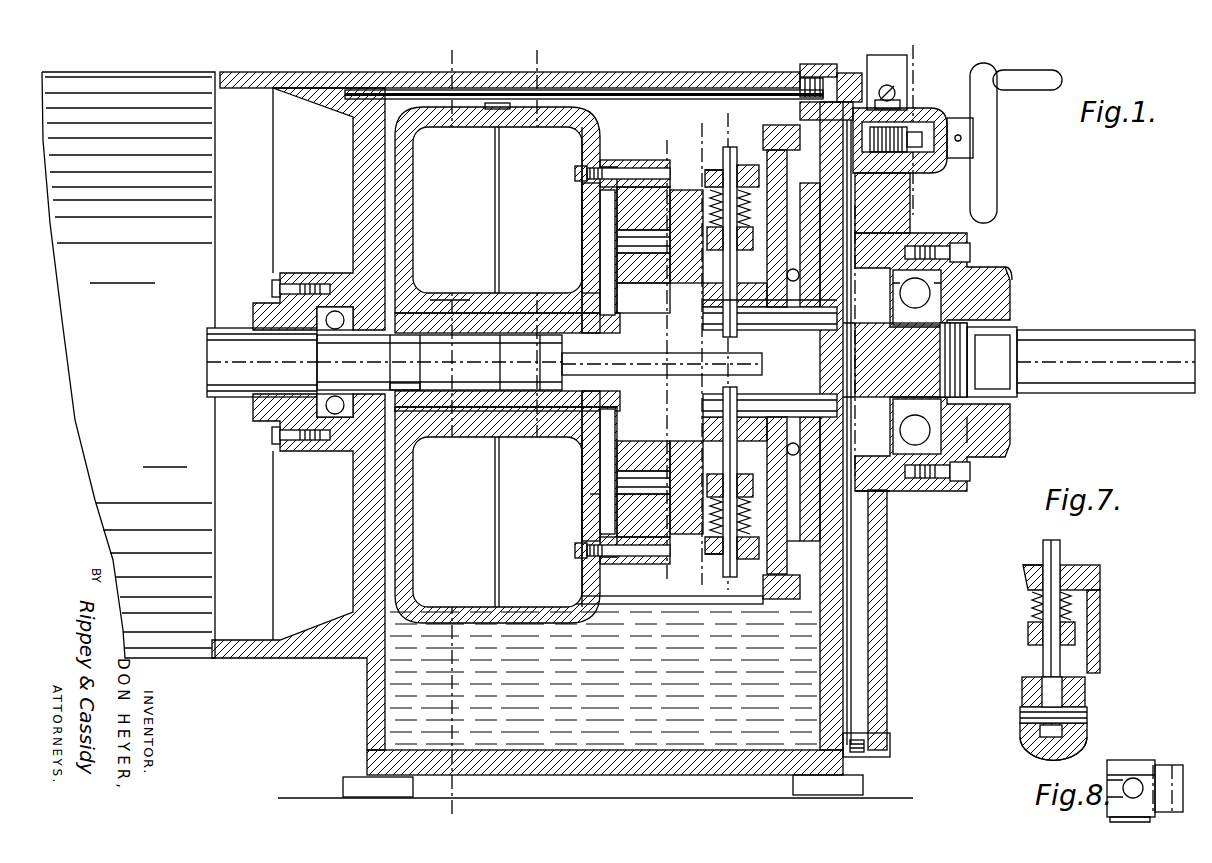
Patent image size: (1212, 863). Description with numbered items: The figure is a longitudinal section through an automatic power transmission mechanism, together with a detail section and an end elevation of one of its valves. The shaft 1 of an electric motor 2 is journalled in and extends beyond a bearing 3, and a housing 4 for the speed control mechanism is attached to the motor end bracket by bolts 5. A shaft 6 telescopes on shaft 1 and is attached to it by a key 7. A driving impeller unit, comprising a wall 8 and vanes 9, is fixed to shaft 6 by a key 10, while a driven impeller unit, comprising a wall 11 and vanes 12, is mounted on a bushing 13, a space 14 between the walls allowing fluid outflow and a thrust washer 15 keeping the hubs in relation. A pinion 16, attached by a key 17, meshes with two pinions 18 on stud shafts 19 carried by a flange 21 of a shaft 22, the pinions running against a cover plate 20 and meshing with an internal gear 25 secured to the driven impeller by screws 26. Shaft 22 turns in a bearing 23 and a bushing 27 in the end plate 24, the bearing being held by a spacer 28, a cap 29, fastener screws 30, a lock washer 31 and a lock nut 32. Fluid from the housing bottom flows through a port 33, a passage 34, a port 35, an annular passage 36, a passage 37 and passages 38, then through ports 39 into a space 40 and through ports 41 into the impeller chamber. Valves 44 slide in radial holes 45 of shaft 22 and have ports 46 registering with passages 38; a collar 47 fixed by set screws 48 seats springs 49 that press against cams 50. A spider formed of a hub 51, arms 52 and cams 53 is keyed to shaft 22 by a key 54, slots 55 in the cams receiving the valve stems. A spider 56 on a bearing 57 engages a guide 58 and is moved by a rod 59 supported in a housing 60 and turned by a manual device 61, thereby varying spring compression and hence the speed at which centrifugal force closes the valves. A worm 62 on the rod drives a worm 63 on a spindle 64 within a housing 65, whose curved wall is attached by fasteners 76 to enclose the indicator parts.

In FIG. 1, the shaft 1 is at (240, 400).
In FIG. 1, the electric motor 2 is at (270, 72).
In FIG. 1, the bearing 3 is at (537, 50).
In FIG. 1, the housing 4 is at (650, 72).
In FIG. 1, the bolts 5 is at (688, 90).
In FIG. 1, the shaft 6 is at (856, 215).
In FIG. 7, the shaft 6 is at (1022, 748).
In FIG. 1, the key 7 is at (478, 340).
In FIG. 1, the wall 8 is at (413, 195).
In FIG. 1, the vanes 9 is at (472, 265).
In FIG. 1, the key 10 is at (413, 393).
In FIG. 1, the wall 11 is at (587, 253).
In FIG. 1, the vanes 12 is at (513, 262).
In FIG. 1, the bushing 13 is at (520, 340).
In FIG. 1, the space 14 is at (499, 140).
In FIG. 1, the thrust washer 15 is at (440, 295).
In FIG. 1, the pinion 16 is at (643, 442).
In FIG. 1, the key 17 is at (640, 300).
In FIG. 1, the pinions 18 is at (645, 208).
In FIG. 1, the stud shafts 19 is at (617, 243).
In FIG. 1, the cover plate 20 is at (590, 495).
In FIG. 1, the flange 21 is at (686, 190).
In FIG. 1, the shaft 22 is at (1100, 332).
In FIG. 7, the shaft 22 is at (1020, 735).
In FIG. 1, the bearing 23 is at (975, 440).
In FIG. 1, the end plate 24 is at (888, 588).
In FIG. 1, the internal gear 25 is at (613, 168).
In FIG. 1, the screws 26 is at (577, 174).
In FIG. 1, the bushing 27 is at (857, 250).
In FIG. 1, the spacer 28 is at (975, 268).
In FIG. 1, the cap 29 is at (1012, 290).
In FIG. 1, the fastener screws 30 is at (972, 250).
In FIG. 1, the lock washer 31 is at (935, 330).
In FIG. 1, the lock nut 32 is at (1005, 313).
In FIG. 1, the port 33 is at (866, 745).
In FIG. 1, the passage 34 is at (860, 615).
In FIG. 1, the port 35 is at (885, 492).
In FIG. 1, the annular passage 36 is at (915, 430).
In FIG. 1, the passage 37 is at (860, 373).
In FIG. 1, the passages 38 is at (745, 290).
In FIG. 7, the passages 38 is at (1087, 715).
In FIG. 1, the ports 39 is at (609, 188).
In FIG. 1, the space 40 is at (585, 287).
In FIG. 1, the ports 41 is at (582, 213).
In FIG. 1, the valves 44 is at (722, 263).
In FIG. 7, the valves 44 is at (1043, 670).
In FIG. 8, the valves 44 is at (1135, 779).
In FIG. 7, the radial holes 45 is at (1062, 731).
In FIG. 1, the ports 46 is at (718, 357).
In FIG. 7, the ports 46 is at (1085, 697).
In FIG. 1, the collar 47 is at (745, 230).
In FIG. 7, the collar 47 is at (1028, 635).
In FIG. 1, the set screws 48 is at (752, 252).
In FIG. 7, the set screws 48 is at (1075, 630).
In FIG. 1, the springs 49 is at (745, 210).
In FIG. 7, the springs 49 is at (1033, 613).
In FIG. 1, the cams 50 is at (714, 170).
In FIG. 7, the cams 50 is at (1035, 583).
In FIG. 8, the cams 50 is at (1122, 760).
In FIG. 1, the hub 51 is at (775, 303).
In FIG. 1, the arms 52 is at (787, 225).
In FIG. 7, the arms 52 is at (1100, 660).
In FIG. 1, the cams 53 is at (748, 165).
In FIG. 7, the cams 53 is at (1075, 567).
In FIG. 8, the cams 53 is at (1165, 766).
In FIG. 1, the key 54 is at (760, 332).
In FIG. 1, the slots 55 is at (738, 147).
In FIG. 7, the slots 55 is at (1032, 565).
In FIG. 8, the slots 55 is at (1112, 804).
In FIG. 1, the spider 56 is at (800, 545).
In FIG. 1, the bearing 57 is at (800, 275).
In FIG. 1, the guide 58 is at (765, 600).
In FIG. 1, the rod 59 is at (783, 125).
In FIG. 1, the housing 60 is at (930, 172).
In FIG. 1, the manual device 61 is at (995, 70).
In FIG. 1, the worm 62 is at (910, 150).
In FIG. 1, the worm 63 is at (907, 130).
In FIG. 1, the spindle 64 is at (893, 102).
In FIG. 1, the housing 65 is at (832, 64).
In FIG. 1, the fasteners 76 is at (886, 85).